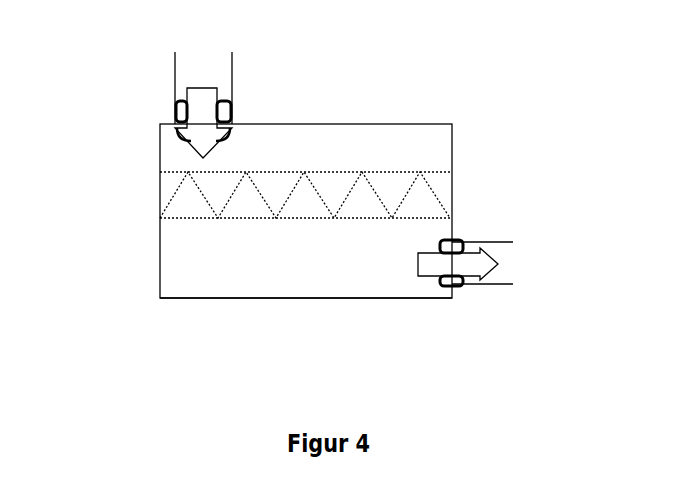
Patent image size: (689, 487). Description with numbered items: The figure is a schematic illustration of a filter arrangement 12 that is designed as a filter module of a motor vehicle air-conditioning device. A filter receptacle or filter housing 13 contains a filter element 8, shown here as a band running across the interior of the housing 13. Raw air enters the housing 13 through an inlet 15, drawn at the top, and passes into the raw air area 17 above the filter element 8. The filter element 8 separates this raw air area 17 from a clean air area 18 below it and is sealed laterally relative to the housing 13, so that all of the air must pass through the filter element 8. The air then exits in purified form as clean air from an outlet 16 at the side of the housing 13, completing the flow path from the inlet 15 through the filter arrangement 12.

The filter arrangement 12 is at (503, 84).
The filter housing 13 is at (235, 299).
The inlet 15 is at (232, 73).
The outlet 16 is at (488, 241).
The raw air area 17 is at (338, 145).
The clean air area 18 is at (168, 265).
The filter element 8 is at (173, 200).